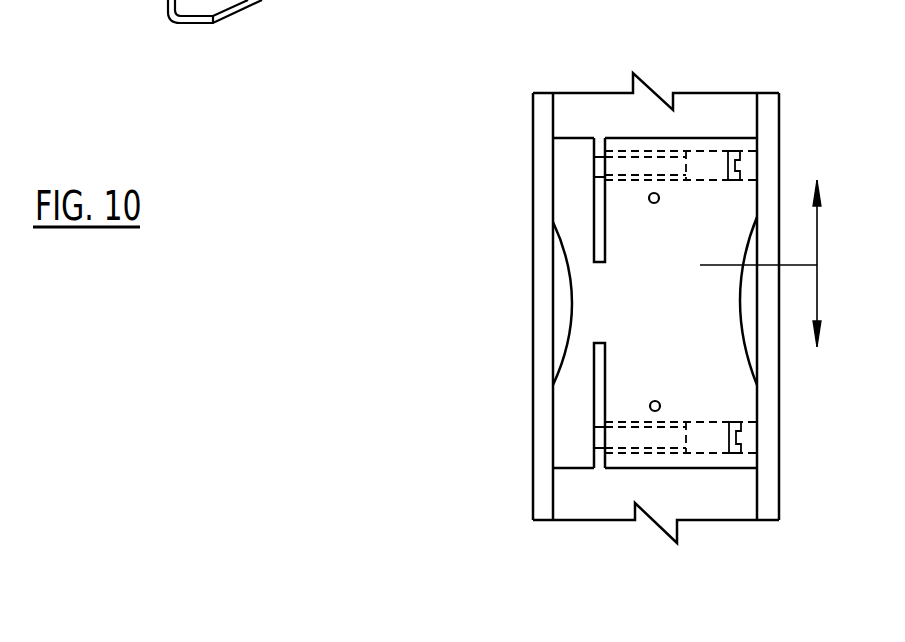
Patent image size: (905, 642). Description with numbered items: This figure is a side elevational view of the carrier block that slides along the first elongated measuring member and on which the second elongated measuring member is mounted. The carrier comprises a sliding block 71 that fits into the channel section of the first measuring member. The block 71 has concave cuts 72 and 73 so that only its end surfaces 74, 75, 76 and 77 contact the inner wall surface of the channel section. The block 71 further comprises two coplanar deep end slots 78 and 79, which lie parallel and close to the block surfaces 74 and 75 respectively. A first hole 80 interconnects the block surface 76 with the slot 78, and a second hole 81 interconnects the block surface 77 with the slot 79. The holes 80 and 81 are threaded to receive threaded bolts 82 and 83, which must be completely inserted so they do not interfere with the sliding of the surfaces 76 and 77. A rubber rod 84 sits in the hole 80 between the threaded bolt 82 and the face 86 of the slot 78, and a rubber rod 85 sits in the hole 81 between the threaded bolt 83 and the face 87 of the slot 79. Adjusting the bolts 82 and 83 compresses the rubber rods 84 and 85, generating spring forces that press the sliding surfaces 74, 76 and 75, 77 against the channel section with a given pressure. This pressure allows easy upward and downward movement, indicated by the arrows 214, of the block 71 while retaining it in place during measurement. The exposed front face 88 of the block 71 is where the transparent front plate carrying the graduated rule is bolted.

The sliding block 71 is at (630, 465).
The concave cut 72 is at (567, 335).
The concave cut 73 is at (747, 333).
The end surface 74 is at (553, 172).
The end surface 75 is at (533, 462).
The block surface 76 is at (758, 195).
The block surface 77 is at (758, 408).
The deep end slot 78 is at (597, 205).
The deep end slot 79 is at (597, 406).
The first hole 80 is at (674, 157).
The second hole 81 is at (640, 455).
The threaded bolt 82 is at (718, 157).
The threaded bolt 83 is at (723, 443).
The rubber rod 84 is at (633, 157).
The rubber rod 85 is at (682, 442).
The face of the slot 86 is at (605, 225).
The face of the slot 87 is at (605, 363).
The exposed front face 88 is at (600, 292).
The arrows 214 is at (820, 250).